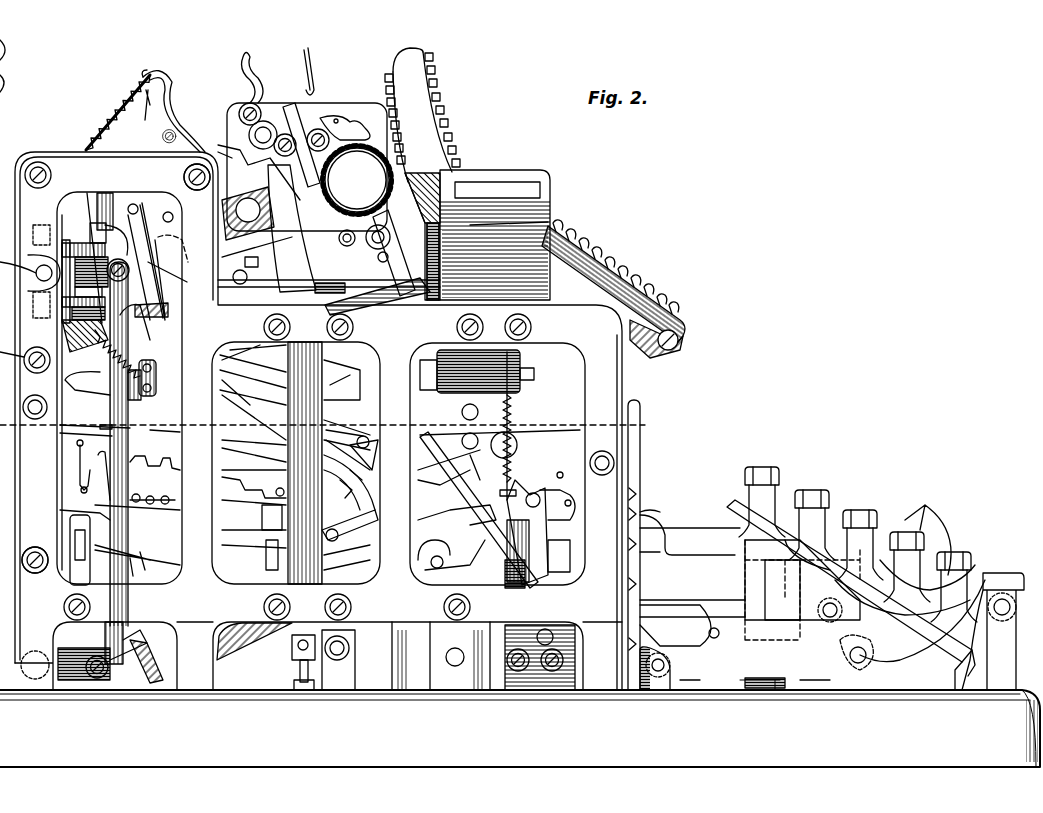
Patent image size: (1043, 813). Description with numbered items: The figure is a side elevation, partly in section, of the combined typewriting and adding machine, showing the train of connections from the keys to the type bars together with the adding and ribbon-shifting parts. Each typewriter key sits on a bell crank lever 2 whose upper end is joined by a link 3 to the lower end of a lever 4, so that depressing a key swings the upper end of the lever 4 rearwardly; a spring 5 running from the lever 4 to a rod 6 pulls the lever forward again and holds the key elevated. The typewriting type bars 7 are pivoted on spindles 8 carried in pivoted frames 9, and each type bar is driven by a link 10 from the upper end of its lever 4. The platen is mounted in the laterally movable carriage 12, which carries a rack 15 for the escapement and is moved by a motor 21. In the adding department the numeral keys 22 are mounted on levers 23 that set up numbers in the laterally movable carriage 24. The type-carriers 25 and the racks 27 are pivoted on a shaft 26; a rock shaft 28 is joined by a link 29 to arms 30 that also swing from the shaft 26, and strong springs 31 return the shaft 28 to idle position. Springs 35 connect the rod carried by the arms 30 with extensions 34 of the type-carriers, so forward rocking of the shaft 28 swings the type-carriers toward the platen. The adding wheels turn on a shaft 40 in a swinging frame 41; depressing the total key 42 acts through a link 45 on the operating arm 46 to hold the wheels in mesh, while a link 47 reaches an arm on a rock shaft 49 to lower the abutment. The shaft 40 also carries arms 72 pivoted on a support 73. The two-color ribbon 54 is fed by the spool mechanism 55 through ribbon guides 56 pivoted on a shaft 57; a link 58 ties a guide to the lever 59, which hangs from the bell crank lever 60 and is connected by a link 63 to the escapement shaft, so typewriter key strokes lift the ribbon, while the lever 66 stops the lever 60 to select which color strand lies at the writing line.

The bell crank lever 2 is at (735, 633).
The link 3 is at (586, 454).
The lever 4 is at (70, 327).
The spring 5 is at (128, 354).
The rod 6 is at (160, 367).
The typewriting type bar 7 is at (618, 235).
The spindle 8 is at (440, 240).
The pivoted frame 9 is at (425, 282).
The link 10 is at (412, 292).
The laterally movable carriage 12 is at (318, 115).
The rack 15 is at (240, 165).
The motor 21 is at (227, 207).
The numeral key 22 is at (748, 478).
The lever 23 is at (680, 525).
The laterally movable carriage 24 is at (114, 570).
The type-carrier 25 is at (455, 150).
The shaft 26 is at (184, 177).
The rack 27 is at (120, 480).
The rock shaft 28 is at (448, 652).
The link 29 is at (253, 457).
The arm 30 is at (143, 318).
The spring 31 is at (235, 628).
The extension 34 is at (160, 95).
The spring 35 is at (108, 112).
The shaft 40 is at (335, 480).
The swinging frame 41 is at (350, 540).
The key 42 is at (808, 492).
The link 45 is at (560, 562).
The operating arm 46 is at (478, 510).
The link 47 is at (148, 570).
The rock shaft 49 is at (36, 573).
The ribbon 54 is at (448, 208).
The spool mechanism 55 is at (508, 172).
The ribbon guide 56 is at (509, 216).
The shaft 57 is at (173, 255).
The link 58 is at (245, 298).
The lever 59 is at (198, 290).
The bell crank lever 60 is at (178, 240).
The link 63 is at (115, 207).
The lever 66 is at (92, 200).
The arm 72 is at (420, 455).
The support 73 is at (520, 445).